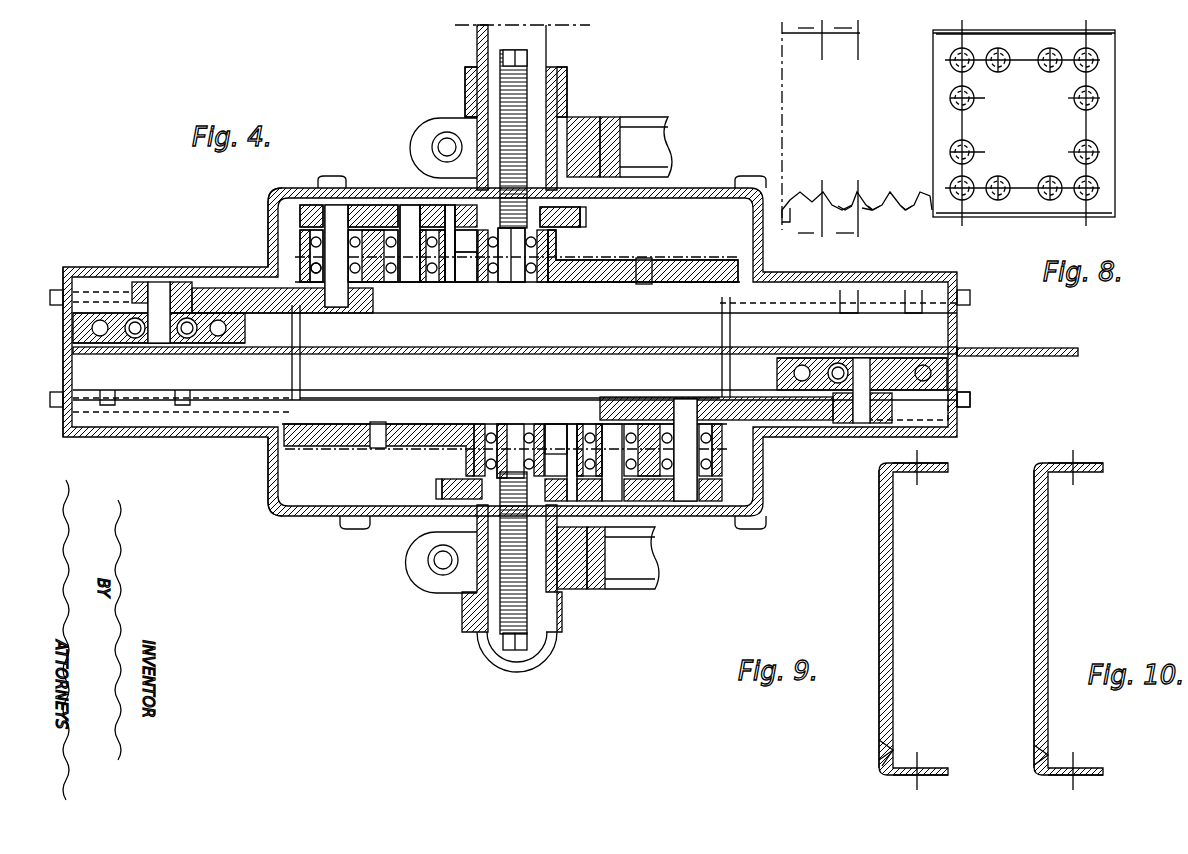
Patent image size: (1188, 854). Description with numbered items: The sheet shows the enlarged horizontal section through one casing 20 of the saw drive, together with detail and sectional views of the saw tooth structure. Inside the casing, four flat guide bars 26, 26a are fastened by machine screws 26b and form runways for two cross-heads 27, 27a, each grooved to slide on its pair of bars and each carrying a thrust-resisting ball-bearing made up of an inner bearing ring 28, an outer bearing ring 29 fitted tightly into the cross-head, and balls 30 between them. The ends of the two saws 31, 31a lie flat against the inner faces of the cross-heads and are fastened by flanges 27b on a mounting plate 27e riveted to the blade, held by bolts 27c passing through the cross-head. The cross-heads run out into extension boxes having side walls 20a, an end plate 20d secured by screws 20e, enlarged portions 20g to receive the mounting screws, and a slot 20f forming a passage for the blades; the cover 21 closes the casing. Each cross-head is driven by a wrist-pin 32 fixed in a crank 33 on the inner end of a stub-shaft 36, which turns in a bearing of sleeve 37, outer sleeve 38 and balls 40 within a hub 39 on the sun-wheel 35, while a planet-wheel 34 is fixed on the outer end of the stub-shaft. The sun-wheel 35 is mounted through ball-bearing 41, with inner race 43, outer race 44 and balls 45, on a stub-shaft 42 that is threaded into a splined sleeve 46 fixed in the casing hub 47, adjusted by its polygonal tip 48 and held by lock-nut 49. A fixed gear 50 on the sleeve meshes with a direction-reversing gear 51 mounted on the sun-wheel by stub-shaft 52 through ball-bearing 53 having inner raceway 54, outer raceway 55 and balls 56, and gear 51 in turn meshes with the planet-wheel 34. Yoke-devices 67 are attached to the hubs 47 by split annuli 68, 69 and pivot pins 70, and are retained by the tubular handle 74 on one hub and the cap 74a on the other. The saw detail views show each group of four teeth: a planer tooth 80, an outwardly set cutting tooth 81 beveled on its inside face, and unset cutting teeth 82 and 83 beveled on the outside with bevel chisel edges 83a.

In FIG. 4, the casing 20 is at (302, 190).
In FIG. 4, the side walls 20a is at (235, 280).
In FIG. 4, the end plate 20d is at (66, 440).
In FIG. 4, the screws 20e is at (972, 400).
In FIG. 4, the slot 20f is at (980, 350).
In FIG. 4, the enlarged portions 20g is at (125, 280).
In FIG. 4, the housing cover 21 is at (270, 250).
In FIG. 4, the cross-head guide bars 26 is at (652, 390).
In FIG. 4, the cross-head guide bars 26a is at (700, 318).
In FIG. 4, the machine screws 26b is at (150, 402).
In FIG. 4, the cross-head 27 is at (780, 366).
In FIG. 4, the cross-head 27a is at (246, 326).
In FIG. 8, the flanges 27b is at (1116, 33).
In FIG. 9, the flanges 27b is at (934, 472).
In FIG. 10, the flanges 27b is at (1090, 472).
In FIG. 4, the bolts 27c is at (100, 320).
In FIG. 4, the mounting plate 27e is at (226, 354).
In FIG. 8, the mounting plate 27e is at (1098, 118).
In FIG. 9, the mounting plate 27e is at (894, 615).
In FIG. 10, the mounting plate 27e is at (1049, 618).
In FIG. 4, the inner bearing ring 28 is at (178, 340).
In FIG. 4, the outer bearing ring 29 is at (202, 340).
In FIG. 4, the balls 30 is at (136, 338).
In FIG. 4, the saw 31 is at (796, 358).
In FIG. 4, the saw 31a is at (106, 346).
In FIG. 9, the saw 31a is at (880, 622).
In FIG. 10, the saw 31a is at (1036, 630).
In FIG. 4, the wrist-pin 32 is at (160, 286).
In FIG. 4, the crank 33 is at (300, 306).
In FIG. 4, the planet-wheel 34 is at (302, 214).
In FIG. 4, the sun-wheel 35 is at (594, 272).
In FIG. 4, the stub-shaft 36 is at (336, 214).
In FIG. 4, the bearing sleeve 37 is at (300, 250).
In FIG. 4, the outer bearing sleeve 38 is at (376, 264).
In FIG. 4, the hub 39 is at (302, 266).
In FIG. 4, the balls 40 is at (372, 218).
In FIG. 4, the ball-bearing 41 is at (504, 284).
In FIG. 4, the stub-shaft 42 is at (514, 244).
In FIG. 4, the inner race 43 is at (530, 440).
In FIG. 4, the outer race 44 is at (556, 440).
In FIG. 4, the balls 45 is at (594, 398).
In FIG. 4, the splined sleeve 46 is at (566, 116).
In FIG. 4, the hub 47 is at (592, 118).
In FIG. 4, the polygonal tip 48 is at (524, 60).
In FIG. 4, the lock-nut 49 is at (560, 82).
In FIG. 4, the fixed gear 50 is at (584, 218).
In FIG. 4, the direction-reversing gear 51 is at (488, 212).
In FIG. 4, the stub-shaft 52 is at (424, 266).
In FIG. 4, the ball-bearing 53 is at (450, 268).
In FIG. 4, the inner raceway 54 is at (466, 241).
In FIG. 4, the outer raceway 55 is at (466, 267).
In FIG. 4, the balls 56 is at (409, 243).
In FIG. 4, the yoke-device 67 is at (650, 132).
In FIG. 4, the split annulus 68 is at (440, 582).
In FIG. 4, the split annulus 69 is at (452, 128).
In FIG. 4, the pivot pin 70 is at (438, 146).
In FIG. 4, the tubular handle 74 is at (477, 44).
In FIG. 4, the cap 74a is at (532, 668).
In FIG. 8, the planer tooth 80 is at (806, 194).
In FIG. 8, the cutting tooth 81 is at (874, 212).
In FIG. 10, the cutting tooth 81 is at (1046, 762).
In FIG. 8, the cutting tooth 82 is at (843, 206).
In FIG. 9, the cutting tooth 82 is at (878, 756).
In FIG. 8, the cutting tooth 83 is at (904, 206).
In FIG. 8, the bevel chisel edges 83a is at (874, 208).
In FIG. 9, the bevel chisel edges 83a is at (894, 768).